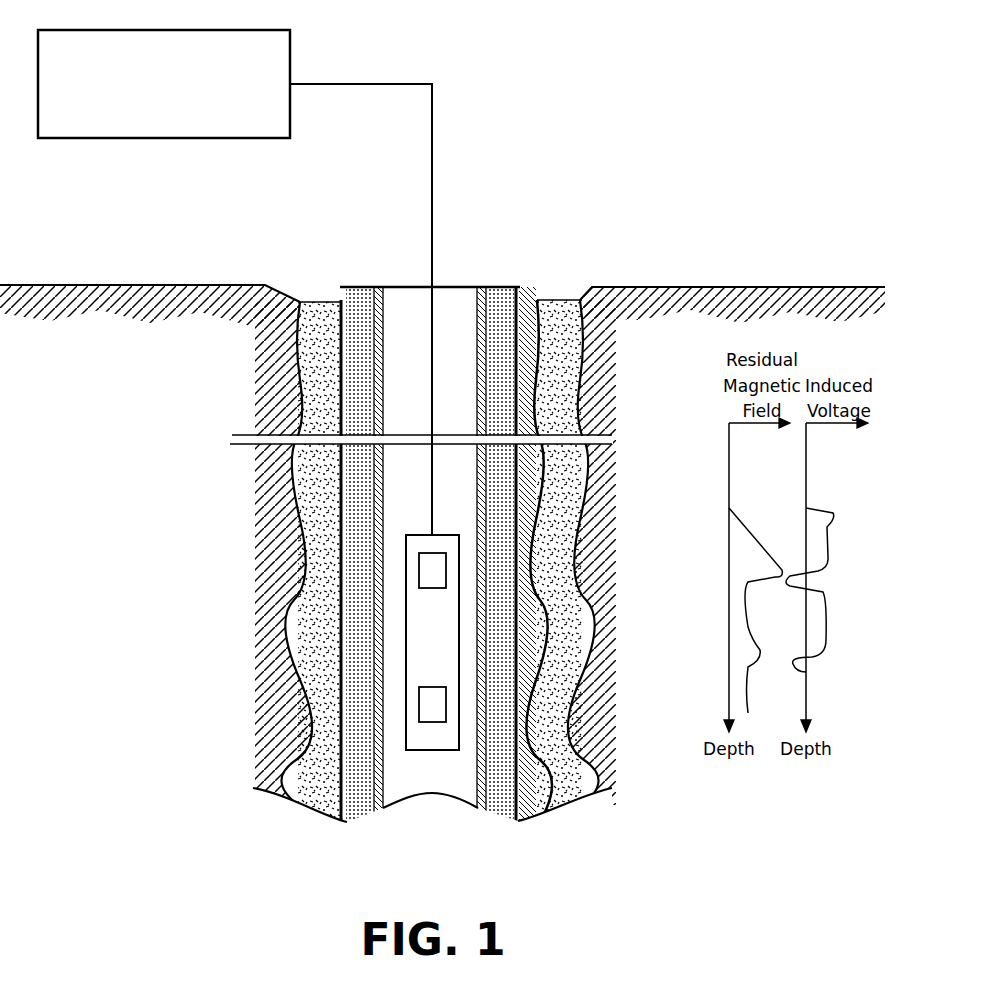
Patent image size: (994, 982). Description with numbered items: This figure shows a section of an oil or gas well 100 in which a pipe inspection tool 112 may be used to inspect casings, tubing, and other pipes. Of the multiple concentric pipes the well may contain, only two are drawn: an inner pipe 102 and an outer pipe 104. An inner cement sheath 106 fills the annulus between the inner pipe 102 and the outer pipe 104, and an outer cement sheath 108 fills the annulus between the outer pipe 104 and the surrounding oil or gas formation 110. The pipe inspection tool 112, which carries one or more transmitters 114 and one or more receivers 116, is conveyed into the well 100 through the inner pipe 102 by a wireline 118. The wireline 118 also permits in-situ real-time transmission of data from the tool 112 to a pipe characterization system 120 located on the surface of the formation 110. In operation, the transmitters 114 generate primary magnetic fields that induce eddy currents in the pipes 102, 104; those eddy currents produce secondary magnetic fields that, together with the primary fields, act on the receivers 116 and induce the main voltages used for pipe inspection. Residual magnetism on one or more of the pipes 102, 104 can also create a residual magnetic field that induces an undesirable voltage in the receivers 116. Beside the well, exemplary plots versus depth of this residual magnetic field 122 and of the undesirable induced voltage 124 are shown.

The oil or gas well 100 is at (607, 100).
The inner pipe 102 is at (487, 521).
The outer pipe 104 is at (542, 357).
The inner cement sheath 106 is at (548, 716).
The outer cement sheath 108 is at (500, 756).
The oil or gas formation 110 is at (109, 469).
The pipe inspection tool 112 is at (460, 628).
The transmitter 114 is at (419, 573).
The receiver 116 is at (419, 702).
The wireline 118 is at (433, 106).
The pipe characterization system 120 is at (148, 120).
The residual magnetic field plot 122 is at (743, 511).
The induced voltage plot 124 is at (810, 509).